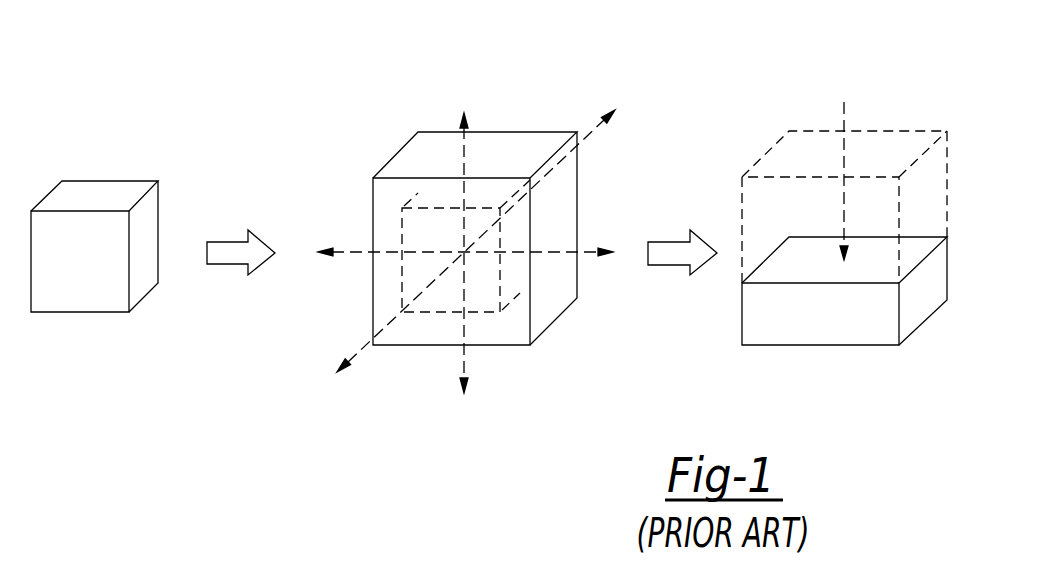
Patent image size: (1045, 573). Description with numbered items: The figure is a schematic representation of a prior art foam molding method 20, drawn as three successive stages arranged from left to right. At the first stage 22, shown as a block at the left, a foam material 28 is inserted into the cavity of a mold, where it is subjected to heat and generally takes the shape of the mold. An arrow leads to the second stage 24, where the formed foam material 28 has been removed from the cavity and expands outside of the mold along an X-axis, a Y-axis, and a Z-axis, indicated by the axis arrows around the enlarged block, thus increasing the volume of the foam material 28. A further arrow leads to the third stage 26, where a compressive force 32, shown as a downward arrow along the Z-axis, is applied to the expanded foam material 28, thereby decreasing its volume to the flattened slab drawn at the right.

The prior art foam molding method 20 is at (212, 61).
The first stage 22 is at (85, 344).
The second stage 24 is at (495, 397).
The third stage 26 is at (813, 379).
The foam material 28 is at (72, 192).
The compressive force 32 is at (844, 217).